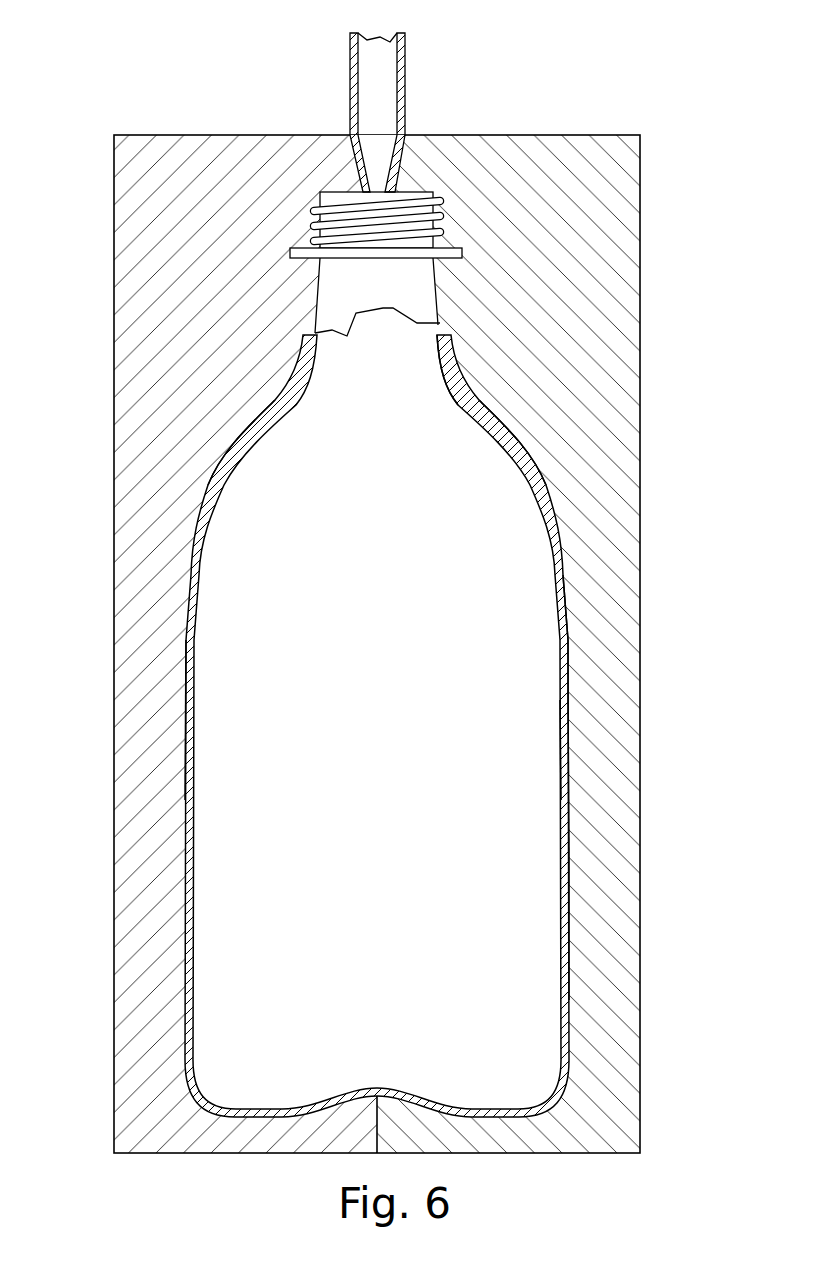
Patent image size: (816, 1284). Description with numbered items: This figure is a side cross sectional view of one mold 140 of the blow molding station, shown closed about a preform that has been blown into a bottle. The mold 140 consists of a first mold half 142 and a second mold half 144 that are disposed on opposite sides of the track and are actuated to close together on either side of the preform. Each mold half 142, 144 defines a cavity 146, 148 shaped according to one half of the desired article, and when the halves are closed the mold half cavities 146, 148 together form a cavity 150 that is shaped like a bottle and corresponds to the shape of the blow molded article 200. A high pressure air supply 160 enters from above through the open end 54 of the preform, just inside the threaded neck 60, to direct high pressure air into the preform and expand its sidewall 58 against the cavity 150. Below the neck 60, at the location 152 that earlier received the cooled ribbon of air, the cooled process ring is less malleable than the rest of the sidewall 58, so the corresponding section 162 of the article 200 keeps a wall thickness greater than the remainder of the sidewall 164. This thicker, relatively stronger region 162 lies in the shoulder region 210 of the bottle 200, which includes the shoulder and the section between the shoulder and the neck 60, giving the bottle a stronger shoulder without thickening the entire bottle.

The mold 140 is at (111, 84).
The first mold half 142 is at (162, 247).
The second mold half 144 is at (641, 333).
The open end 54 is at (332, 192).
The neck 60 is at (433, 208).
The high pressure air supply 160 is at (405, 84).
The shoulder region 210 is at (292, 393).
The location 152 is at (488, 405).
The strengthened region 162 is at (458, 400).
The blow molded article 200 is at (525, 592).
The sidewall 58 is at (186, 648).
The cavity 146 is at (186, 720).
The sidewall 164 is at (563, 749).
The cavity 148 is at (569, 777).
The cavity 150 is at (569, 904).